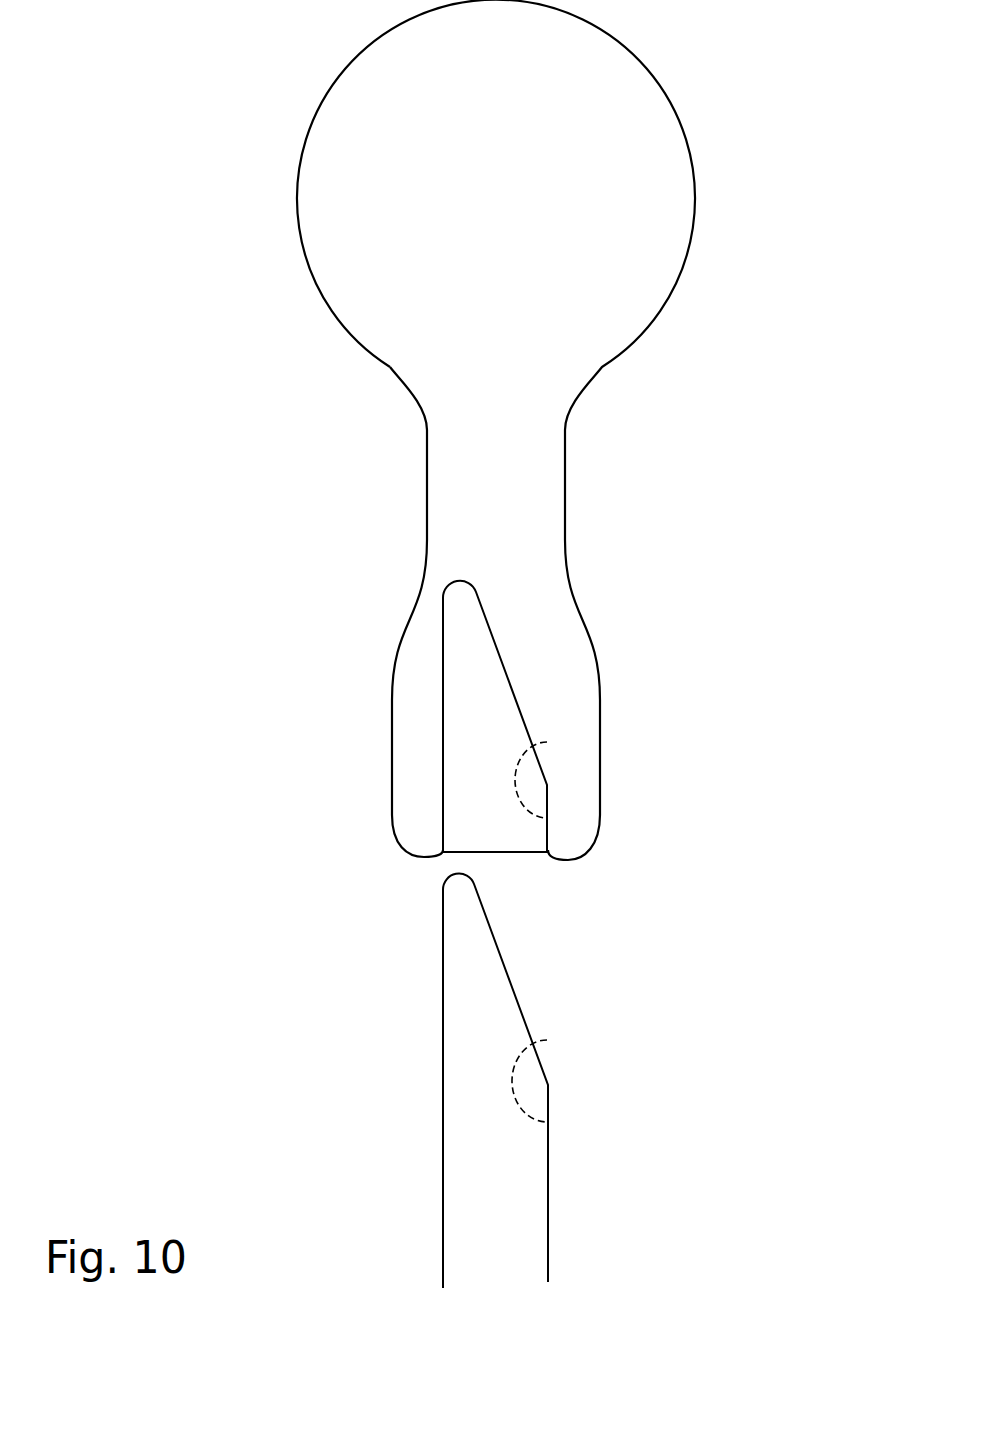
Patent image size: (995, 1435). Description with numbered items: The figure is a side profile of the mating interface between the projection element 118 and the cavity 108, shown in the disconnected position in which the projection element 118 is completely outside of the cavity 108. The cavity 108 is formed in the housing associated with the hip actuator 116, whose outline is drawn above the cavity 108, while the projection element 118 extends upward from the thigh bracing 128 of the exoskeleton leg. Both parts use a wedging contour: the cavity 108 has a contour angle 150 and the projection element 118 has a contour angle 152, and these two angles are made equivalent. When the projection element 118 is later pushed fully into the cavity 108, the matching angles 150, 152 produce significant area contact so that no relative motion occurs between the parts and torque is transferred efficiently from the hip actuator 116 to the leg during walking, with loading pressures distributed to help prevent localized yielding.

The hip actuator 116 is at (295, 182).
The cavity 108 is at (477, 852).
The angle 150 is at (515, 780).
The projection element 118 is at (507, 968).
The angle 152 is at (513, 1080).
The thigh bracing 128 is at (548, 1263).